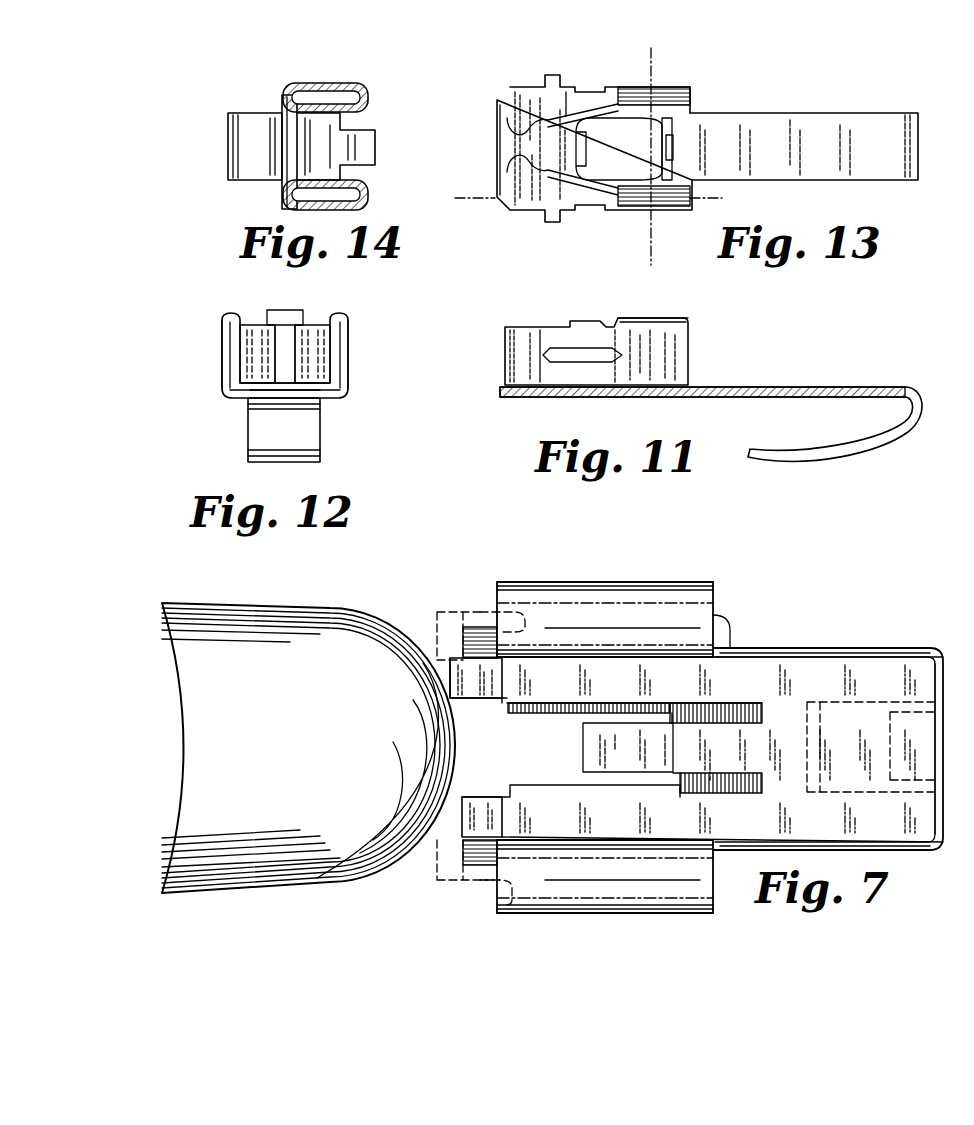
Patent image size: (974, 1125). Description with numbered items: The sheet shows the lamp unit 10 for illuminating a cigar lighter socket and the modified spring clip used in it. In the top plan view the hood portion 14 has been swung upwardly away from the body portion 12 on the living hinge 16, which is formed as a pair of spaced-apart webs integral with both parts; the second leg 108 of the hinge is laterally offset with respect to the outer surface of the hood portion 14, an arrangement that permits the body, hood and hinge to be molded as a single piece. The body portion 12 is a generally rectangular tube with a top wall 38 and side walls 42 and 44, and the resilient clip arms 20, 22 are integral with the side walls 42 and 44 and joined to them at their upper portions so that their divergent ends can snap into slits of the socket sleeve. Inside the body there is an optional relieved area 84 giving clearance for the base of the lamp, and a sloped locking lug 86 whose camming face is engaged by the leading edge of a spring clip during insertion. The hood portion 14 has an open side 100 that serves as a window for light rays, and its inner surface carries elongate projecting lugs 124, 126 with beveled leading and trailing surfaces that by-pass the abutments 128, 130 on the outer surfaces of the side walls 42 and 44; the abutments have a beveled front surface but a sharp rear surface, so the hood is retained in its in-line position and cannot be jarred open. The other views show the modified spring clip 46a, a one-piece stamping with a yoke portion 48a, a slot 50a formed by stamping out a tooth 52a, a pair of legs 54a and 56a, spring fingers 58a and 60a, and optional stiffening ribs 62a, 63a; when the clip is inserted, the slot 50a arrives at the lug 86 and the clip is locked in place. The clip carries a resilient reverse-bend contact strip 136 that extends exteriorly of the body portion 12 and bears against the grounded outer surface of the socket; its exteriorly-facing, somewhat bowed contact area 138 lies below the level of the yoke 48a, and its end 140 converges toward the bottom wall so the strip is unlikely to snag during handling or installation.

In FIG. 7, the lamp unit 10 is at (462, 585).
In FIG. 7, the body portion 12 is at (838, 632).
In FIG. 13, the hood portion 14 is at (648, 55).
In FIG. 7, the hood portion 14 is at (340, 630).
In FIG. 7, the living hinge 16 is at (447, 640).
In FIG. 7, the resilient clip arm 20 is at (715, 624).
In FIG. 7, the resilient clip arm 22 is at (500, 882).
In FIG. 7, the top wall 38 is at (898, 665).
In FIG. 7, the side wall 42 is at (788, 650).
In FIG. 7, the side wall 44 is at (905, 846).
In FIG. 14, the modified spring clip 46a is at (232, 101).
In FIG. 13, the modified spring clip 46a is at (494, 82).
In FIG. 12, the modified spring clip 46a is at (212, 378).
In FIG. 11, the modified spring clip 46a is at (500, 356).
In FIG. 14, the yoke portion 48a is at (290, 114).
In FIG. 13, the yoke portion 48a is at (530, 148).
In FIG. 12, the yoke portion 48a is at (300, 400).
In FIG. 13, the slot 50a is at (655, 115).
In FIG. 14, the tooth 52a is at (363, 137).
In FIG. 13, the tooth 52a is at (673, 125).
In FIG. 12, the tooth 52a is at (287, 314).
In FIG. 11, the tooth 52a is at (675, 310).
In FIG. 14, the leg 54a is at (325, 84).
In FIG. 13, the leg 54a is at (663, 80).
In FIG. 12, the leg 54a is at (222, 346).
In FIG. 14, the leg 56a is at (350, 212).
In FIG. 13, the leg 56a is at (668, 212).
In FIG. 12, the leg 56a is at (348, 357).
In FIG. 13, the spring finger 58a is at (572, 112).
In FIG. 12, the spring finger 58a is at (262, 330).
In FIG. 11, the spring finger 58a is at (542, 333).
In FIG. 13, the spring finger 60a is at (556, 176).
In FIG. 12, the spring finger 60a is at (310, 330).
In FIG. 13, the stiffening rib 62a is at (570, 113).
In FIG. 11, the stiffening rib 62a is at (558, 348).
In FIG. 13, the stiffening rib 63a is at (588, 180).
In FIG. 7, the relieved area 84 is at (565, 714).
In FIG. 7, the sloped locking lug 86 is at (640, 742).
In FIG. 7, the open side 100 is at (182, 778).
In FIG. 7, the second leg of hinge 108 is at (440, 660).
In FIG. 7, the elongate projecting lug 124 is at (520, 583).
In FIG. 7, the elongate projecting lug 126 is at (514, 895).
In FIG. 7, the abutment 128 is at (480, 627).
In FIG. 7, the abutment 130 is at (480, 868).
In FIG. 14, the contact strip 136 is at (252, 190).
In FIG. 13, the contact strip 136 is at (812, 103).
In FIG. 12, the contact strip 136 is at (246, 423).
In FIG. 11, the contact strip 136 is at (808, 372).
In FIG. 11, the contact area 138 is at (856, 458).
In FIG. 11, the end of strip 140 is at (765, 458).